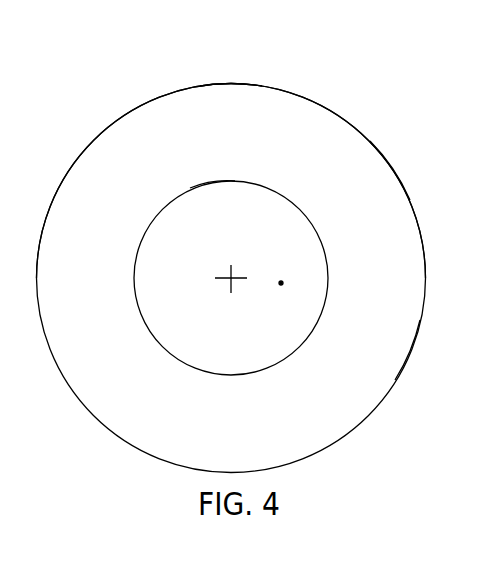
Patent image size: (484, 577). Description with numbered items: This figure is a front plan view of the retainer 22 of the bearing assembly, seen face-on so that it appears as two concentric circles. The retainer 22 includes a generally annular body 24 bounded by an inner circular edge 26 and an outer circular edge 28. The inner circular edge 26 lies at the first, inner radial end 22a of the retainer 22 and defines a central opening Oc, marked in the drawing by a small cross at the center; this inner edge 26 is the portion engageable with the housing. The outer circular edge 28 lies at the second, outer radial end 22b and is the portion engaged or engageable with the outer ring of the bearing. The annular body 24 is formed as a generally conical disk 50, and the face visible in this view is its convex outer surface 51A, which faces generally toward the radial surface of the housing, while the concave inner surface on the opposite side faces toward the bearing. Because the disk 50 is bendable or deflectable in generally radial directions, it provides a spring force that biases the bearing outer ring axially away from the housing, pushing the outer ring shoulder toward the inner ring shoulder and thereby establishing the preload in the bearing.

The retainer 22 is at (97, 81).
The first axial end 22a is at (212, 185).
The second axial end 22b is at (213, 84).
The annular body 24 is at (79, 158).
The inner circular edge 26 is at (180, 196).
The outer circular edge 28 is at (290, 93).
The conical disk 50 is at (400, 349).
The convex outer surface 51A is at (382, 178).
The central opening Oc is at (281, 283).